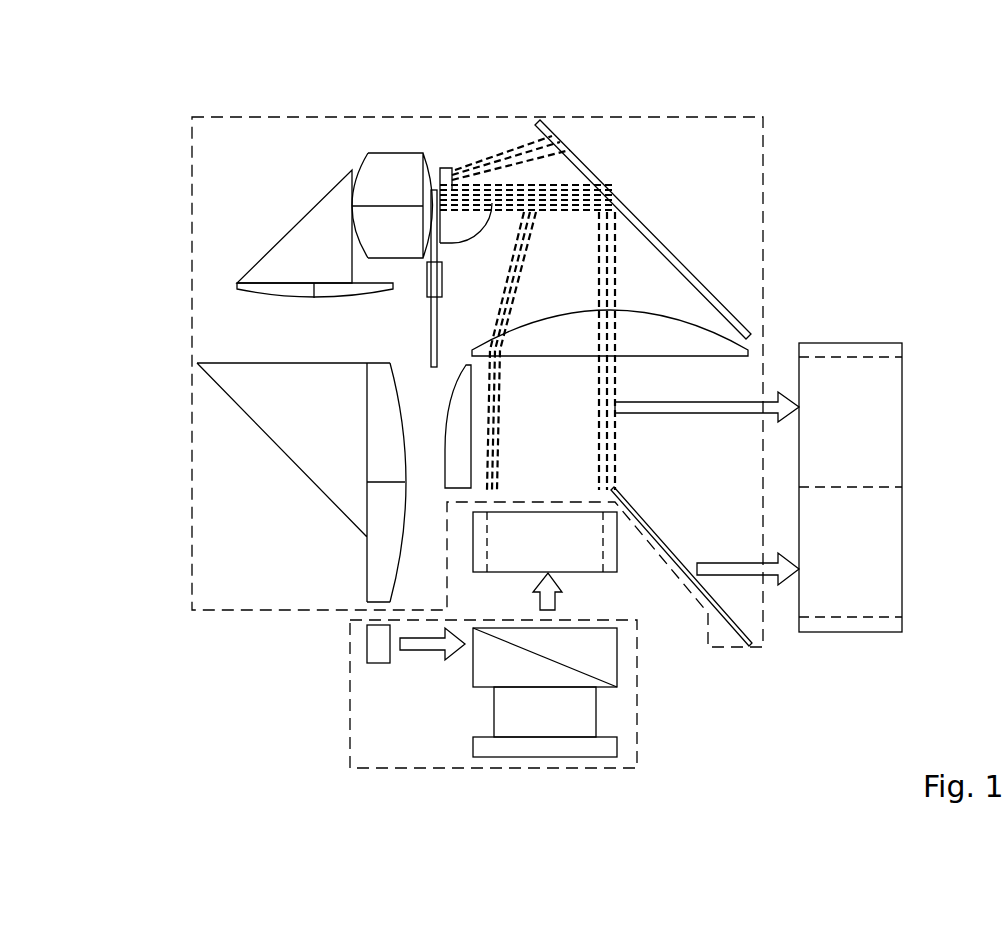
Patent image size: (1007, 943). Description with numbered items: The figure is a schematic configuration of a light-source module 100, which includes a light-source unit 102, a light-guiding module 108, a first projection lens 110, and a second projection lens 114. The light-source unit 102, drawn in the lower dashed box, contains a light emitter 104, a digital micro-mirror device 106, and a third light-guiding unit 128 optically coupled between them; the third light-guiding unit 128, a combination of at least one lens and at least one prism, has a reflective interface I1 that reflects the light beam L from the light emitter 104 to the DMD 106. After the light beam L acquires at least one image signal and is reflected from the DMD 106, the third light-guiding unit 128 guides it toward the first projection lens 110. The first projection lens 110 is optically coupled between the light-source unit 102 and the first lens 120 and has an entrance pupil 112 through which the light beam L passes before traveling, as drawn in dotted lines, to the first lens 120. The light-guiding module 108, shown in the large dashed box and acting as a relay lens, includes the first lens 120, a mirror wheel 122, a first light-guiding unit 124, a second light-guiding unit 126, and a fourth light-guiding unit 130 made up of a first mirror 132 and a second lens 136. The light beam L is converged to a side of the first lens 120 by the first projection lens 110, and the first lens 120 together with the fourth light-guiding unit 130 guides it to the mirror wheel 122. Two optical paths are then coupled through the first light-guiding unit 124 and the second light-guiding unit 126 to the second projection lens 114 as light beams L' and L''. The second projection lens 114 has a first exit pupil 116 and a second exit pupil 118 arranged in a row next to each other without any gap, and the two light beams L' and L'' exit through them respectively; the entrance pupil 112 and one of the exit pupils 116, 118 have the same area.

The light-source module 100 is at (133, 63).
The light-source unit 102 is at (350, 643).
The light emitter 104 is at (372, 664).
The digital micro-mirror device (DMD) 106 is at (617, 747).
The light-guiding module 108 is at (763, 170).
The first projection lens 110 is at (473, 553).
The entrance pupil 112 is at (483, 535).
The second projection lens 114 is at (893, 342).
The first exit pupil 116 is at (852, 355).
The second exit pupil 118 is at (852, 618).
The first lens 120 is at (683, 320).
The mirror wheel 122 is at (433, 188).
The first light-guiding unit 124 is at (270, 218).
The second light-guiding unit 126 is at (750, 645).
The third light-guiding unit 128 is at (617, 658).
The fourth light-guiding unit 130 is at (555, 68).
The first mirror 132 is at (537, 123).
The second lens 136 is at (443, 168).
The reflective interface I1 is at (535, 655).
The light beam L is at (511, 646).
The light beam L' is at (707, 358).
The light beam L'' is at (749, 619).